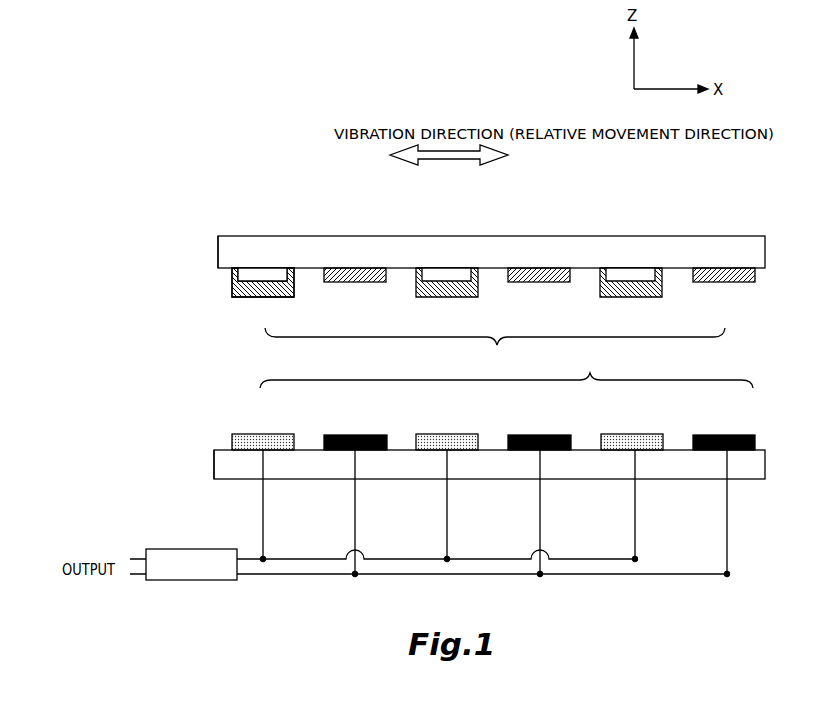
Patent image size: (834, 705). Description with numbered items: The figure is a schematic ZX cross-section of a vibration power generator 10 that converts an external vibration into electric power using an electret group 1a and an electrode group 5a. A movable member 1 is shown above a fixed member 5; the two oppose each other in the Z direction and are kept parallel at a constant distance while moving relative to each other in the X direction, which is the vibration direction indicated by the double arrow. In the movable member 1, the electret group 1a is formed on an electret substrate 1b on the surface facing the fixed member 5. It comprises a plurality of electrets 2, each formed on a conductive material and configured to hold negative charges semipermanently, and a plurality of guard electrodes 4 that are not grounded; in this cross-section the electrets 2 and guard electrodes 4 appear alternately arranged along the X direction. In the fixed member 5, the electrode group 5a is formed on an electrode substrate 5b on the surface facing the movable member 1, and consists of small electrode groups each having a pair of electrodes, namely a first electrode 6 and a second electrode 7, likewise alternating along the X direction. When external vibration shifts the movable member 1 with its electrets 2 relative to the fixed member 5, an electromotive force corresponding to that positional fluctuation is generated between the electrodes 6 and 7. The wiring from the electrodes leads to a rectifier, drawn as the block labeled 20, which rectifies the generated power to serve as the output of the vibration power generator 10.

The movable member 1 is at (627, 236).
The electret group 1a is at (495, 349).
The electret substrate 1b is at (218, 251).
The electret 2 is at (262, 296).
The guard electrode 4 is at (352, 283).
The fixed member 5 is at (228, 479).
The electrode group 5a is at (506, 370).
The electrode substrate 5b is at (214, 471).
The first electrode 6 is at (250, 434).
The second electrode 7 is at (351, 434).
The vibration power generator 10 is at (168, 406).
The rectifier 20 is at (210, 549).